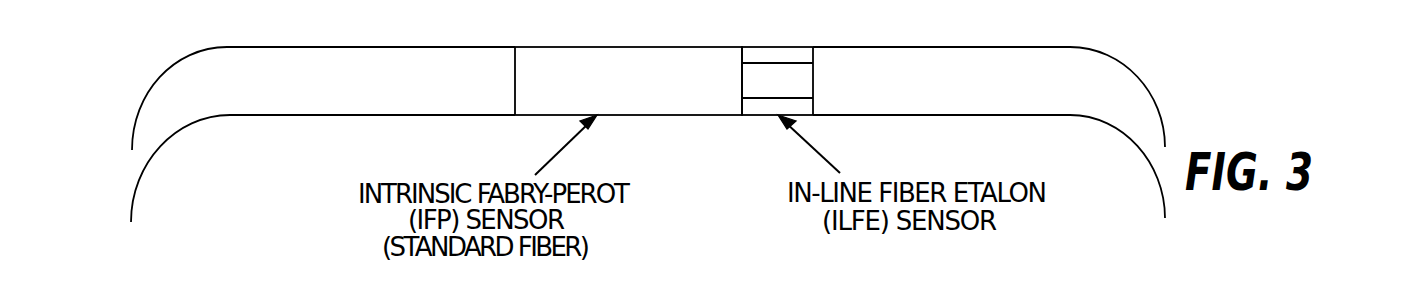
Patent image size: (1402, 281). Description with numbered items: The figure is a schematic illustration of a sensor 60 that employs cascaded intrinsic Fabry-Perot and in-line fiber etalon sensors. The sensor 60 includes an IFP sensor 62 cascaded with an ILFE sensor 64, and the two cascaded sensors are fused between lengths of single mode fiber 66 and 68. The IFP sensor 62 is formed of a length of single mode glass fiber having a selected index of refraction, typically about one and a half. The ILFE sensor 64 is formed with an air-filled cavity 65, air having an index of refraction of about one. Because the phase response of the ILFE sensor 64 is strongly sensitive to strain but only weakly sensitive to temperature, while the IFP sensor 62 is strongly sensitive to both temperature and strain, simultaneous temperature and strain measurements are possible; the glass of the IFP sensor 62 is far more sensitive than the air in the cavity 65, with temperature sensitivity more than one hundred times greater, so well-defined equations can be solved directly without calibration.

The sensor 60 is at (1123, 27).
The IFP sensor 62 is at (636, 47).
The ILFE sensor 64 is at (805, 47).
The air-filled cavity 65 is at (800, 81).
The single mode fiber 66 is at (457, 18).
The single mode fiber 68 is at (958, 47).